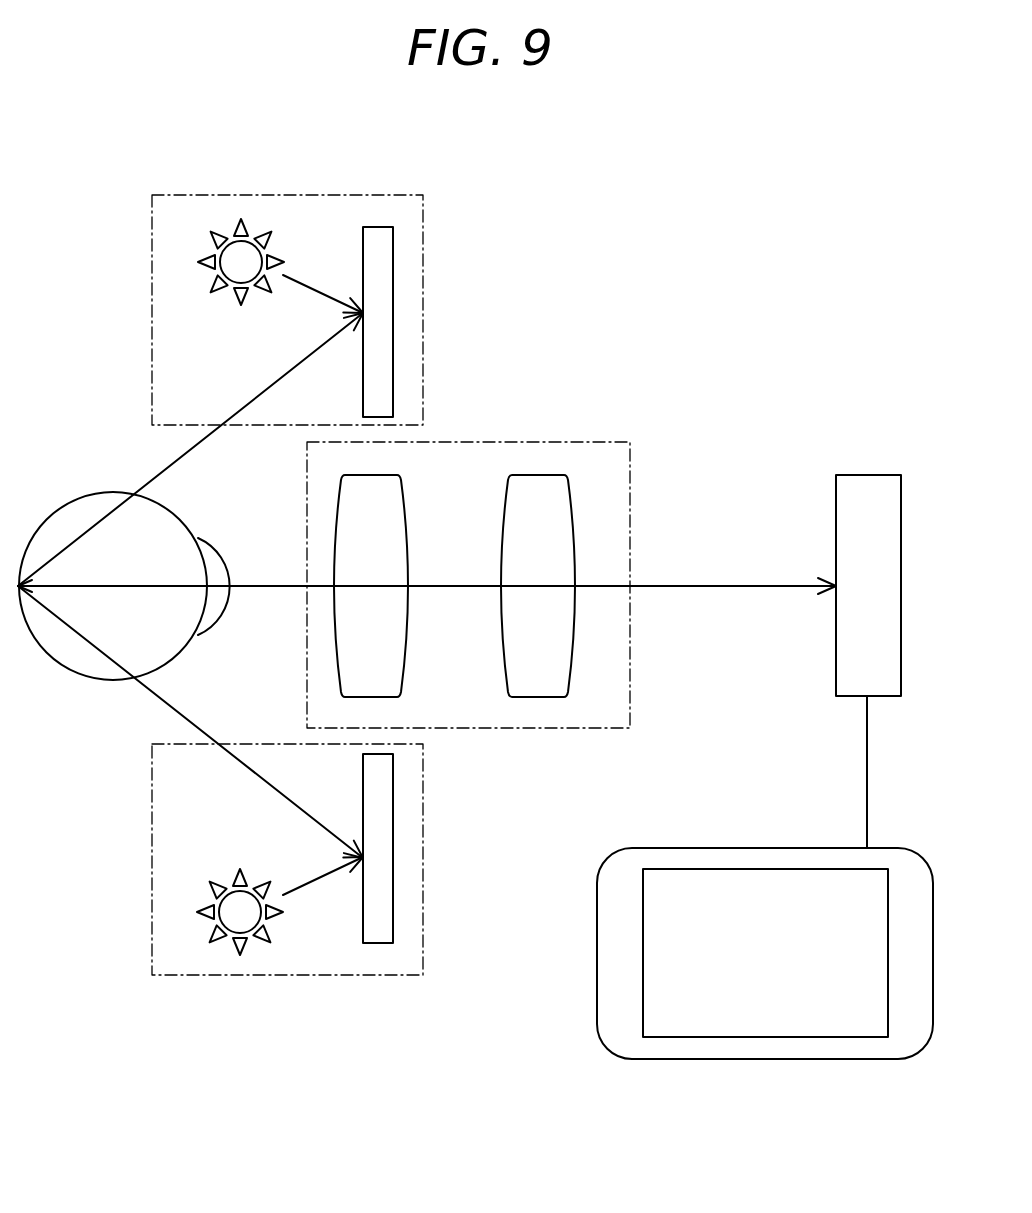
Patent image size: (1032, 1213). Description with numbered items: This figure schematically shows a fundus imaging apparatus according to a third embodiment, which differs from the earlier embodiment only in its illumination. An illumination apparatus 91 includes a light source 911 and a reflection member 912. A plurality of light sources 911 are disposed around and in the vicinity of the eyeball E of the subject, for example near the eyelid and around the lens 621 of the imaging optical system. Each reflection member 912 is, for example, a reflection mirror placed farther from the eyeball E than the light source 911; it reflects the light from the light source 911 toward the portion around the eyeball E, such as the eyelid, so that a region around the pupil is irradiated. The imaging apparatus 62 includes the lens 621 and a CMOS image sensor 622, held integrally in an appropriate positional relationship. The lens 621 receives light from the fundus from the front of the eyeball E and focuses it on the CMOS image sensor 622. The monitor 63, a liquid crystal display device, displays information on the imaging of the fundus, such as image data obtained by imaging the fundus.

The illumination apparatus 91 is at (287, 195).
The light source 911 is at (222, 237).
The reflection member 912 is at (380, 227).
The imaging apparatus 62 is at (502, 442).
The lens 621 is at (378, 475).
The CMOS image sensor 622 is at (538, 475).
The monitor 63 is at (905, 848).
The eyeball E is at (152, 500).